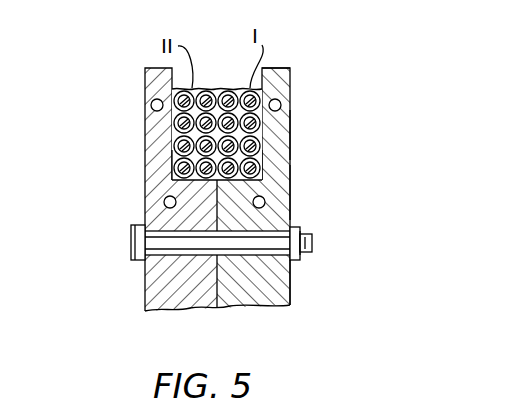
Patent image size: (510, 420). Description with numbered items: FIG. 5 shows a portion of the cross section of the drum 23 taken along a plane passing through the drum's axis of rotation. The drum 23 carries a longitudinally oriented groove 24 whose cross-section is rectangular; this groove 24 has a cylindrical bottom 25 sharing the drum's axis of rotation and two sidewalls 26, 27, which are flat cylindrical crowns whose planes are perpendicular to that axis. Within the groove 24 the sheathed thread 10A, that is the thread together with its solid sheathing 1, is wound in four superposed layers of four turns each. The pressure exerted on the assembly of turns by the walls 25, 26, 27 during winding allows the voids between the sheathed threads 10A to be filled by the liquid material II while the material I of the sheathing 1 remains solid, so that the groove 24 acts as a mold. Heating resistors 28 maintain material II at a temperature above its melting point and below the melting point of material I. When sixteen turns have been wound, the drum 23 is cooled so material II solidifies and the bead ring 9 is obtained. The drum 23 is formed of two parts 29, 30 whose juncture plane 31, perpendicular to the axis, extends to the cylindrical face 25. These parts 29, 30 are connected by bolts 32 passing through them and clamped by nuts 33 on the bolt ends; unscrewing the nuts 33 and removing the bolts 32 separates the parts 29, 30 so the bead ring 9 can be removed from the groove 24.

The solid sheathing 1 is at (283, 82).
The bead ring 9 is at (290, 197).
The sheathed thread 10A is at (225, 88).
The drum 23 is at (290, 178).
The groove 24 is at (265, 86).
The cylindrical bottom 25 is at (180, 178).
The sidewall 26 is at (178, 160).
The sidewall 27 is at (290, 135).
The heating resistors 28 is at (151, 105).
The drum part 29 is at (145, 130).
The drum part 30 is at (292, 158).
The juncture plane 31 is at (147, 226).
The bolts 32 is at (291, 271).
The nuts 33 is at (301, 257).